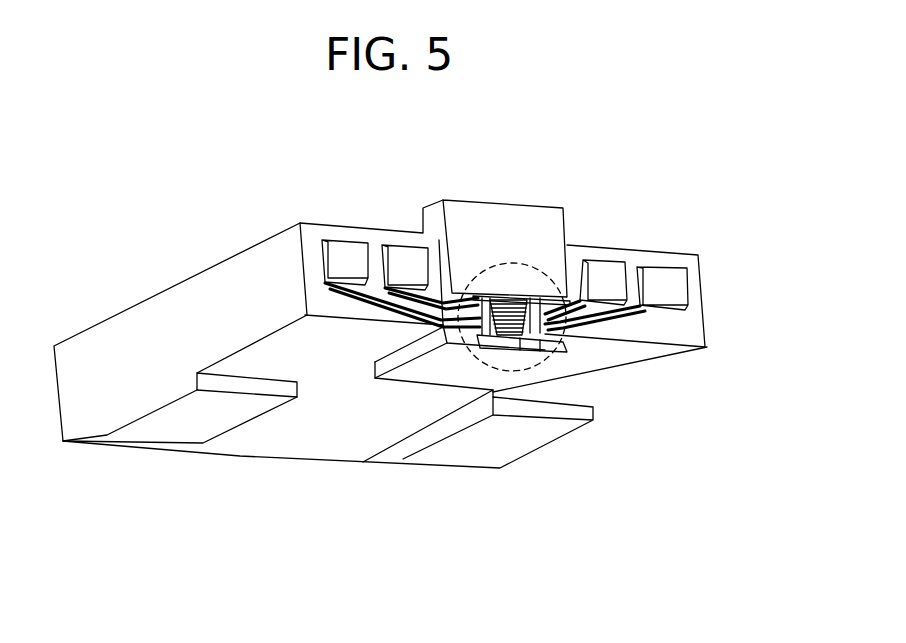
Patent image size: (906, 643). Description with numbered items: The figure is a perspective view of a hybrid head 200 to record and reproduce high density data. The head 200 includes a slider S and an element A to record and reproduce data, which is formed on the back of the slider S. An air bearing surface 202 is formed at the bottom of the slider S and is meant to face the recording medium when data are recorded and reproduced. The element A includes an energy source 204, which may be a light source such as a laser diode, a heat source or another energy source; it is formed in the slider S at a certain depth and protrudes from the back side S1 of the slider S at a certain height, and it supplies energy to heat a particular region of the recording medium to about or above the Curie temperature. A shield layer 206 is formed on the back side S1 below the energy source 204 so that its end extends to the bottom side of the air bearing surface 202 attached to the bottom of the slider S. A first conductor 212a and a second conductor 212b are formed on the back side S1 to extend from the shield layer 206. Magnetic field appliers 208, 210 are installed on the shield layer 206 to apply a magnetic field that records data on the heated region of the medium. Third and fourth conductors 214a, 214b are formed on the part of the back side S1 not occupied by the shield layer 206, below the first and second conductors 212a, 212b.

The hybrid head 200 is at (158, 205).
The air bearing surface 202 is at (518, 445).
The energy source 204 is at (465, 213).
The shield layer 206 is at (522, 348).
The magnetic field applier 208 is at (535, 352).
The magnetic field applier 210 is at (527, 300).
The first conductor 212a is at (425, 292).
The second conductor 212b is at (593, 307).
The third conductor 214a is at (365, 282).
The fourth conductor 214b is at (647, 307).
The element to record and reproduce data A is at (513, 260).
The slider S is at (105, 340).
The back side of slider S1 is at (695, 320).